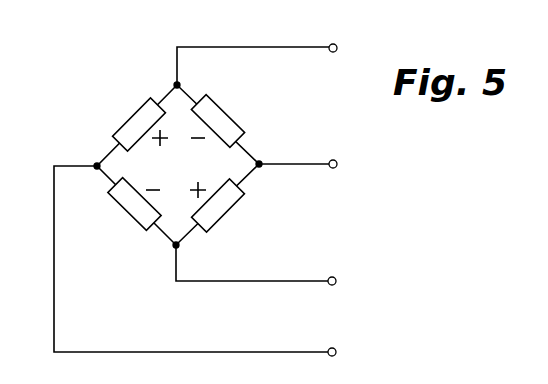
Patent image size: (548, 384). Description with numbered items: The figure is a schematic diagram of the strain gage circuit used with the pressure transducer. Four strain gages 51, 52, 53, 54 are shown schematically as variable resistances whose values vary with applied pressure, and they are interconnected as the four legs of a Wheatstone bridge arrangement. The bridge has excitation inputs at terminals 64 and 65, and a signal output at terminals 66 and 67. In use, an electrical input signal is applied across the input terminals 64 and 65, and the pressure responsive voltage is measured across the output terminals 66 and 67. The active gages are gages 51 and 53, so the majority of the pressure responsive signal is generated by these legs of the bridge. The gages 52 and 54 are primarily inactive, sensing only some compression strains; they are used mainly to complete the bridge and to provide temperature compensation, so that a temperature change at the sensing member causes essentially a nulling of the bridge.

The active strain gage 51 is at (120, 123).
The inactive strain gage 52 is at (122, 220).
The active strain gage 53 is at (233, 203).
The inactive strain gage 54 is at (230, 113).
The excitation input terminal 64 is at (333, 44).
The excitation input terminal 65 is at (329, 277).
The signal output terminal 66 is at (331, 160).
The signal output terminal 67 is at (330, 347).